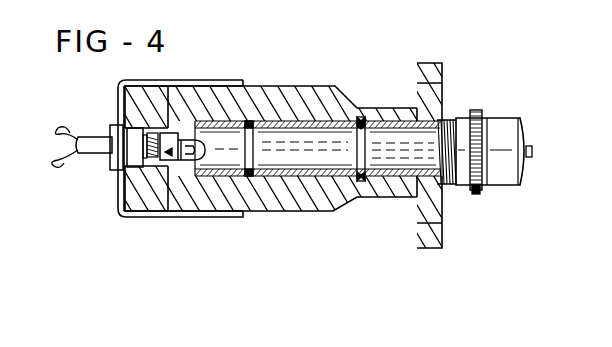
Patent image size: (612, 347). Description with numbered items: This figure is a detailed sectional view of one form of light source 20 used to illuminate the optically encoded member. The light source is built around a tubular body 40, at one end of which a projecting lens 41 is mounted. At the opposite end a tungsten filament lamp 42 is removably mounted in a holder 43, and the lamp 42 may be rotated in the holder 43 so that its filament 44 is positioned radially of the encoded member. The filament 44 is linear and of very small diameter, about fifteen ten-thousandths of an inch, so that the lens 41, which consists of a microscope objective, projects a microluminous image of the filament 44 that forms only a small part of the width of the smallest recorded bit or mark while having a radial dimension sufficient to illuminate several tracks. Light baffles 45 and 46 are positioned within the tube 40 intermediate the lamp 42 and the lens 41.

The detector assembly 20 is at (307, 80).
The tubular body 40 is at (330, 87).
The projecting lens 41 is at (497, 180).
The tungsten filament lamp 42 is at (165, 158).
The holder 43 is at (143, 105).
The lamp filament 44 is at (196, 168).
The light baffle 45 is at (249, 125).
The light baffle 46 is at (361, 185).